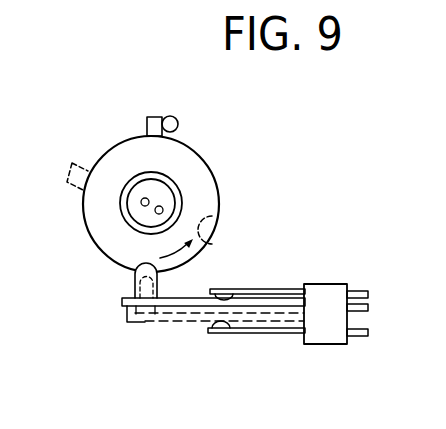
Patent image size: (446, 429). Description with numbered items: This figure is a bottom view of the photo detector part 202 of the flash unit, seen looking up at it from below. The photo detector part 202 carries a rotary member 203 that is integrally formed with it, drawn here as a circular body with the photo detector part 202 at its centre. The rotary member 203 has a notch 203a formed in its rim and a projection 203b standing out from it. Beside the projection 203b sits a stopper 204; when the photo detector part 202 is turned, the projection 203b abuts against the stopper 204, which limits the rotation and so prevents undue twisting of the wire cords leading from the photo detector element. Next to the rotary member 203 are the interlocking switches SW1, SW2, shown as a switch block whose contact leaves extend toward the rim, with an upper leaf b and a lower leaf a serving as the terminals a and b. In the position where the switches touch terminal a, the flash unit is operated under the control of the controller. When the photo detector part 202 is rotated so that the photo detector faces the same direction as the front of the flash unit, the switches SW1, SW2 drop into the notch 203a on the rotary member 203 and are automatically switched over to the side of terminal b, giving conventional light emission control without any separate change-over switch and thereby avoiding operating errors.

The photo detector part 202 is at (183, 200).
The rotary member 203 is at (202, 170).
The notch 203a is at (125, 267).
The projection 203b is at (147, 123).
The stopper 204 is at (178, 124).
The terminal a is at (218, 334).
The terminal b is at (227, 289).
The interlocking switch SW1 is at (329, 344).
The interlocking switch SW2 is at (328, 337).